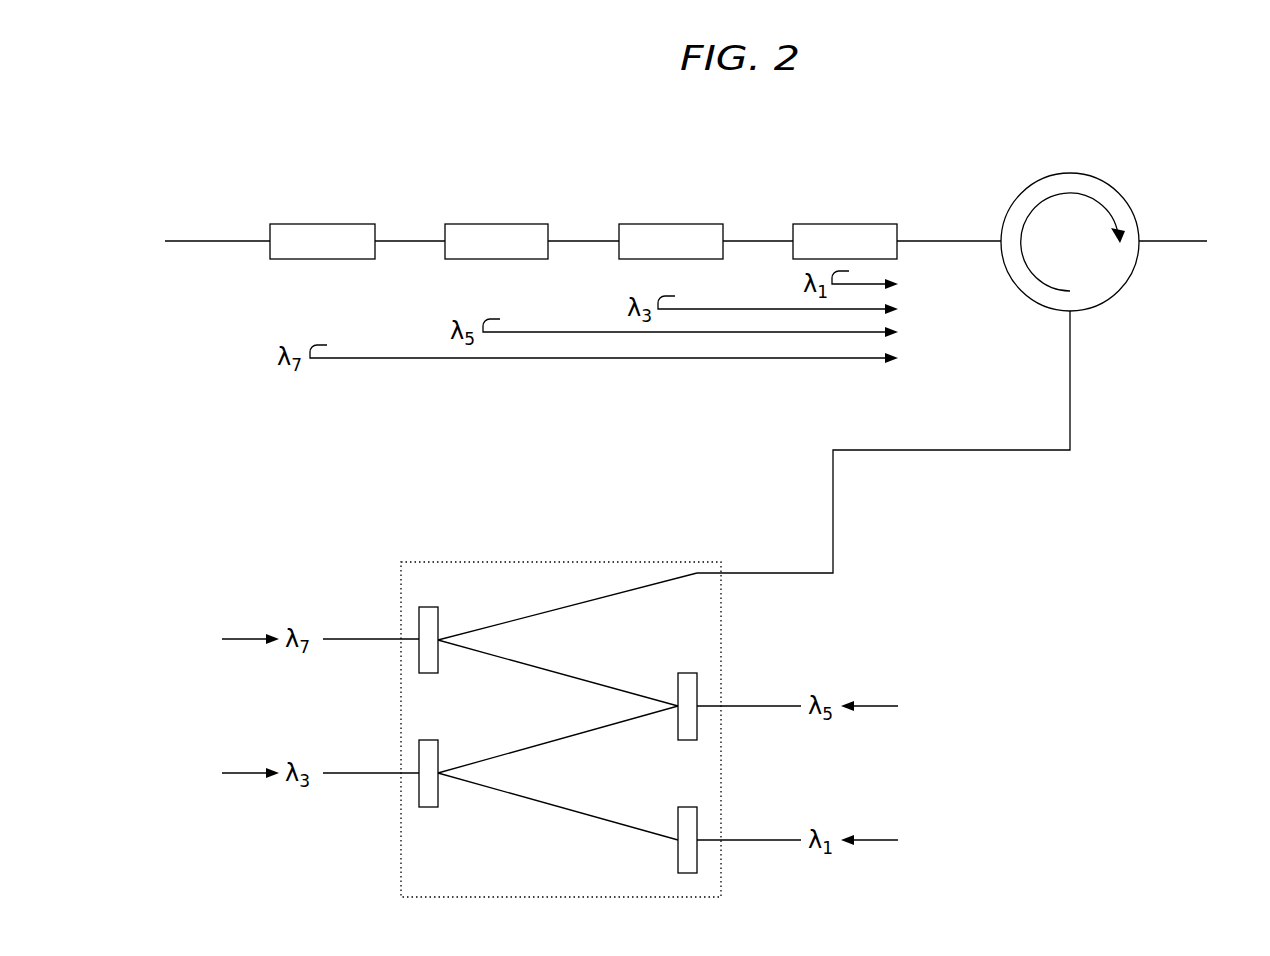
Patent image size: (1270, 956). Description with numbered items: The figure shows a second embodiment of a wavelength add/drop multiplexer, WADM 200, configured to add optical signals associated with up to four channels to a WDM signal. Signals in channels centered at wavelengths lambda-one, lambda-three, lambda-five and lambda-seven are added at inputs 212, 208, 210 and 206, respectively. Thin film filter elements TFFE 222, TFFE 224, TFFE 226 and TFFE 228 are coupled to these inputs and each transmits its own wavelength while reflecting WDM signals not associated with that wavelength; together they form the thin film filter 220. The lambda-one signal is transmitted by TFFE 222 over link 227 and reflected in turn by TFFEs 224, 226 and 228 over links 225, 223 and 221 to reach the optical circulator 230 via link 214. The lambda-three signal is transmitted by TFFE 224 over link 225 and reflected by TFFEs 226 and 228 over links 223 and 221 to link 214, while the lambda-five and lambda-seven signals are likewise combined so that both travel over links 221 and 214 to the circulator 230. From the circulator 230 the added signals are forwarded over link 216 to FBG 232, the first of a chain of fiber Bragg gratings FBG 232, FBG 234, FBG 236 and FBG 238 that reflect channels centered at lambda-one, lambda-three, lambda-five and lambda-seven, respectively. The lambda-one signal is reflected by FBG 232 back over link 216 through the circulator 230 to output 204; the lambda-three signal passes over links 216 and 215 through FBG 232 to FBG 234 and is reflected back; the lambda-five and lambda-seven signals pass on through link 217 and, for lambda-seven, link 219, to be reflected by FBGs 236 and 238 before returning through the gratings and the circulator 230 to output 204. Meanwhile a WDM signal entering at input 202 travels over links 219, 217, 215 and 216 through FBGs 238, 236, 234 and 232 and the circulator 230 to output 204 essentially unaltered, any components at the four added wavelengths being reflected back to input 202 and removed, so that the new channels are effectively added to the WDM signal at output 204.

The WADM 200 is at (747, 127).
The input 202 is at (246, 243).
The output 204 is at (1170, 240).
The input 206 is at (378, 637).
The input 208 is at (386, 776).
The input 210 is at (792, 707).
The input 212 is at (788, 841).
The link 214 is at (923, 451).
The link 215 is at (760, 241).
The link 216 is at (982, 242).
The link 217 is at (586, 241).
The link 219 is at (412, 241).
The thin film filter 220 is at (575, 562).
The link 221 is at (560, 608).
The TFFE 222 is at (690, 808).
The link 223 is at (560, 671).
The TFFE 224 is at (423, 808).
The link 225 is at (558, 739).
The TFFE 226 is at (688, 673).
The link 227 is at (563, 808).
The TFFE 228 is at (418, 660).
The optical circulator 230 is at (1098, 173).
The FBG 232 is at (815, 224).
The FBG 234 is at (640, 224).
The FBG 236 is at (466, 224).
The FBG 238 is at (292, 224).